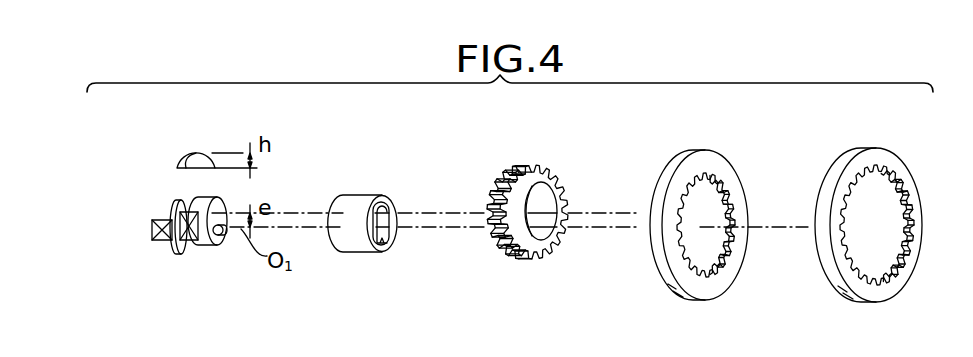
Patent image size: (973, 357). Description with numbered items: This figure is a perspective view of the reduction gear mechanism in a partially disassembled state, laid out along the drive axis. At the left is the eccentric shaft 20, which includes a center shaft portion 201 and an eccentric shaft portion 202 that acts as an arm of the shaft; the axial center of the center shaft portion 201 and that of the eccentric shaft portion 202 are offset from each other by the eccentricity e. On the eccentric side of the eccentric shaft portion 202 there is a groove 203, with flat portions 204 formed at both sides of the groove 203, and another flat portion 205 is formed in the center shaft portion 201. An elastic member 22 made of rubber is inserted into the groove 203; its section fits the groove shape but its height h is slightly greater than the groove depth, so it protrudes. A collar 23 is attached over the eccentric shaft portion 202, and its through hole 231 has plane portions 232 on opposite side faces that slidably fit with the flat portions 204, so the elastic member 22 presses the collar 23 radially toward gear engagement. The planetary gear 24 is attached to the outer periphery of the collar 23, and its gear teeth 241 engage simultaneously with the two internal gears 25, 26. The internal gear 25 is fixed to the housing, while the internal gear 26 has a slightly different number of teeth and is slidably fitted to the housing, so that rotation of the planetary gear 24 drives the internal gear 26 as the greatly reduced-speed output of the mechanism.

The eccentric shaft 20 is at (170, 227).
The center shaft portion 201 is at (158, 240).
The eccentric shaft portion 202 is at (190, 254).
The groove 203 is at (181, 203).
The flat portions 204 is at (197, 246).
The flat portion 205 is at (154, 222).
The elastic member 22 is at (191, 153).
The collar 23 is at (375, 214).
The through hole 231 is at (383, 207).
The plane portions 232 is at (385, 249).
The planetary gear 24 is at (542, 177).
The gear teeth 241 is at (551, 183).
The internal gear 25 is at (703, 150).
The internal gear 26 is at (848, 147).